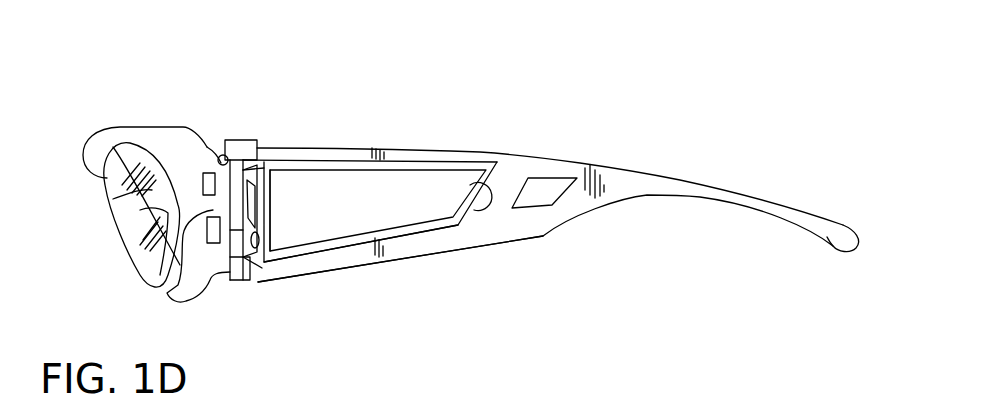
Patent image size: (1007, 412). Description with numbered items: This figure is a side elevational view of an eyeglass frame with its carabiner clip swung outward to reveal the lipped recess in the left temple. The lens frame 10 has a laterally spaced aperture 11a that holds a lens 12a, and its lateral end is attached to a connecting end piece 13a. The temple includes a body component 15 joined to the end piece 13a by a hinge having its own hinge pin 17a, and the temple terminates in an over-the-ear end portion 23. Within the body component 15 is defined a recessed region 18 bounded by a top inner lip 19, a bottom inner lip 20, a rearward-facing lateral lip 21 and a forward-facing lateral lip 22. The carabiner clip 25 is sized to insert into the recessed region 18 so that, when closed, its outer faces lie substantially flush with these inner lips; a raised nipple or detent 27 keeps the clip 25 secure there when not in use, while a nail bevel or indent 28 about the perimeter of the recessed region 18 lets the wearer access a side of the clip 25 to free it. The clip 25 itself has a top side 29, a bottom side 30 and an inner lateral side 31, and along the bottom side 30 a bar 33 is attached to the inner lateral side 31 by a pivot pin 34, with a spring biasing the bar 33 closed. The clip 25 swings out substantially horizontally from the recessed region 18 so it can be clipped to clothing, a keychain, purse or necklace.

The lens frame 10 is at (222, 110).
The aperture 11a is at (118, 140).
The lens 12a is at (112, 217).
The connecting end piece 13a is at (155, 260).
The body component 15 is at (482, 150).
The hinge pin 17a is at (240, 140).
The recessed region 18 is at (393, 150).
The top inner lip 19 is at (357, 170).
The bottom inner lip 20 is at (335, 235).
The rearward-facing lateral inner lip 21 is at (463, 202).
The forward-facing lateral lip 22 is at (273, 190).
The over-the-ear end portion 23 is at (838, 235).
The carabiner clip 25 is at (227, 248).
The raised nipple or detent 27 is at (221, 163).
The nail bevel or indent 28 is at (487, 212).
The top side 29 is at (270, 158).
The bottom side 30 is at (242, 288).
The inner lateral side 31 is at (208, 168).
The bar 33 is at (250, 257).
The pivot pin 34 is at (259, 240).